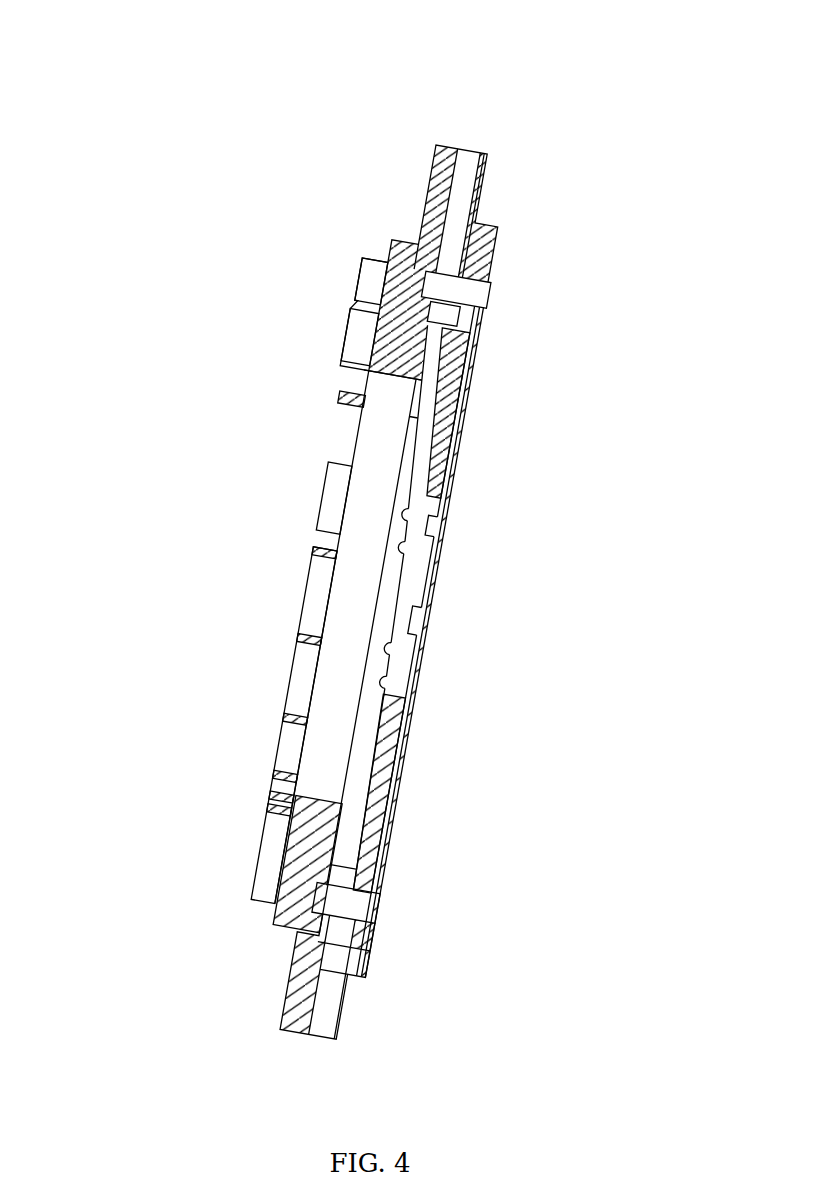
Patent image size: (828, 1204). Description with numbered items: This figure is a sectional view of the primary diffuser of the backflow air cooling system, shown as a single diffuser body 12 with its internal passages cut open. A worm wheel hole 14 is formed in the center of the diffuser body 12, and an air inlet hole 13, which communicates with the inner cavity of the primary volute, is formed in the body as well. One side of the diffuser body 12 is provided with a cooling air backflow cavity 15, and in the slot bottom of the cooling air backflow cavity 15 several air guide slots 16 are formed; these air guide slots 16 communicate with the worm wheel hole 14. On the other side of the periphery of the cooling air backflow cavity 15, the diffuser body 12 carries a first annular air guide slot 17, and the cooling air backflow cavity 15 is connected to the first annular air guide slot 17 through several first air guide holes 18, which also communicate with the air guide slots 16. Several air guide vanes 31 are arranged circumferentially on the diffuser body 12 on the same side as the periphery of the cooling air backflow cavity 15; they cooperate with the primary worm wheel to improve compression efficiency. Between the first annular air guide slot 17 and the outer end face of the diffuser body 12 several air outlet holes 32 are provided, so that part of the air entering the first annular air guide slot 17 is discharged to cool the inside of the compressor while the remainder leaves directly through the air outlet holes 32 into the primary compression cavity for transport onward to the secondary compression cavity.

The diffuser body 12 is at (430, 190).
The air outlet hole 32 is at (470, 190).
The first annular air guide slot 17 is at (468, 287).
The first air guide hole 18 is at (433, 362).
The air guide slot 16 is at (422, 462).
The worm wheel hole 14 is at (430, 565).
The cooling air backflow cavity 15 is at (341, 726).
The air guide vane 31 is at (275, 817).
The air inlet hole 13 is at (307, 948).